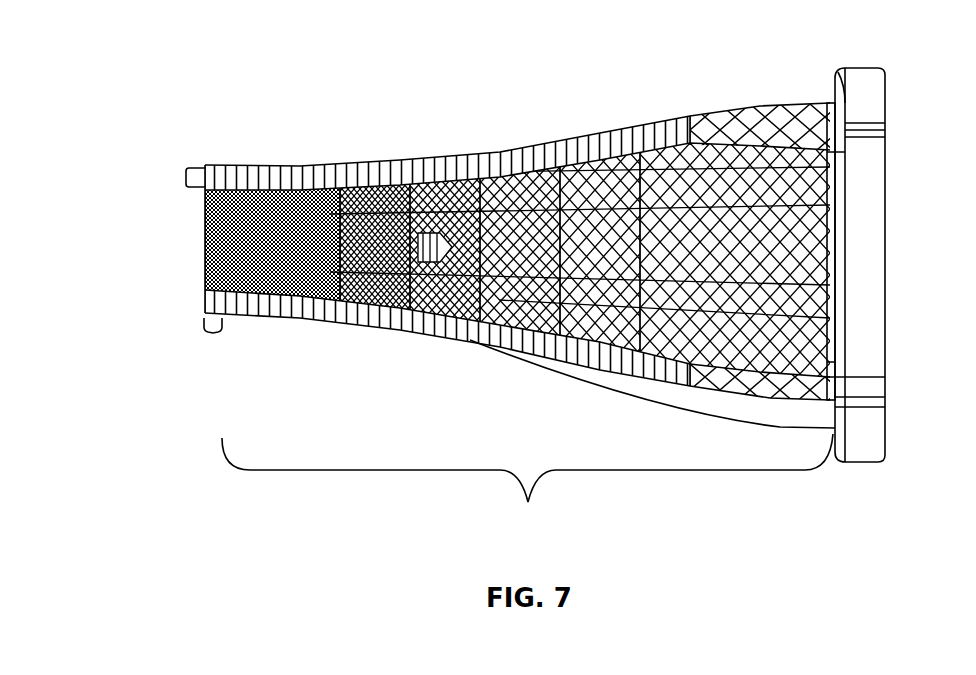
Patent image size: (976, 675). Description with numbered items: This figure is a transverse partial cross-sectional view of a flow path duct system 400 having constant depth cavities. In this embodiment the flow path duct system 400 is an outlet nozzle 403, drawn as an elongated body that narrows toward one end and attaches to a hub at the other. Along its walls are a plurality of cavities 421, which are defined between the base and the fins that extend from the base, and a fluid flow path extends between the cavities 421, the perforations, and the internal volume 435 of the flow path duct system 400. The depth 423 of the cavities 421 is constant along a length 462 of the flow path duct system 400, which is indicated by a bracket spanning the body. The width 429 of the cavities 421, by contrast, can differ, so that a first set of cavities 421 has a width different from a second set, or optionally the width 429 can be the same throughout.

The flow path duct system 400 is at (212, 30).
The outlet nozzle 403 is at (125, 208).
The cavities 421 is at (215, 167).
The depth 423 is at (186, 176).
The width 429 is at (213, 334).
The internal volume 435 is at (236, 253).
The length 462 is at (527, 486).